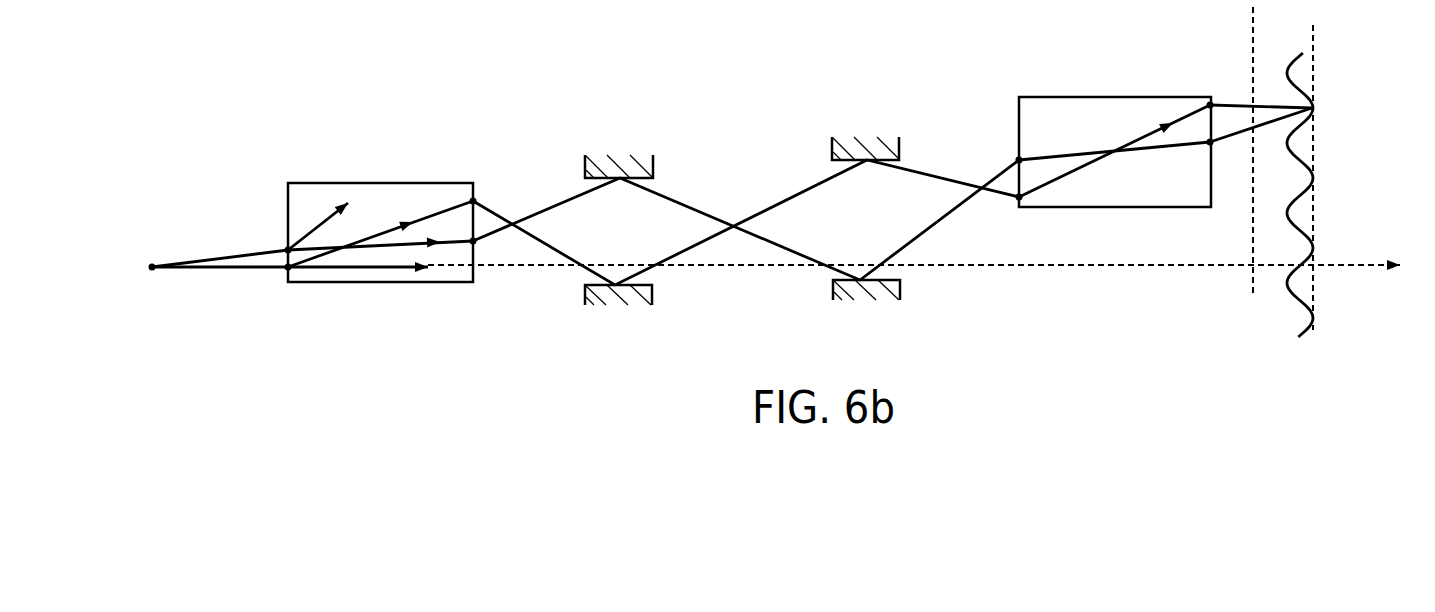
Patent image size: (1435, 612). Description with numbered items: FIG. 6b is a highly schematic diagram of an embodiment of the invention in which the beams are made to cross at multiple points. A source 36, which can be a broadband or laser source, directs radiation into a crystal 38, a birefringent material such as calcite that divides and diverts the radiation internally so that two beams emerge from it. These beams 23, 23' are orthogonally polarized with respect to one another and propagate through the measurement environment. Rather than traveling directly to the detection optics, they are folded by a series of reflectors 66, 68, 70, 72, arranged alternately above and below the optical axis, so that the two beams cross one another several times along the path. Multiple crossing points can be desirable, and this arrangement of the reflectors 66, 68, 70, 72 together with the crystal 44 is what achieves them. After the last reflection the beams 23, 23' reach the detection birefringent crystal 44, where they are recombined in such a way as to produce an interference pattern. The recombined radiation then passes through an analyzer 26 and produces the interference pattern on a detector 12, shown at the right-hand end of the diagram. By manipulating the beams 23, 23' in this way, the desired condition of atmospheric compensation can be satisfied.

The source 36 is at (152, 267).
The crystal 38 is at (367, 182).
The beam 23' is at (746, 222).
The beam 23 is at (746, 220).
The reflector 66 is at (623, 157).
The reflector 68 is at (620, 306).
The reflector 70 is at (870, 139).
The reflector 72 is at (868, 301).
The crystal 44 is at (1110, 97).
The analyzer 26 is at (1252, 237).
The detector 12 is at (1315, 285).